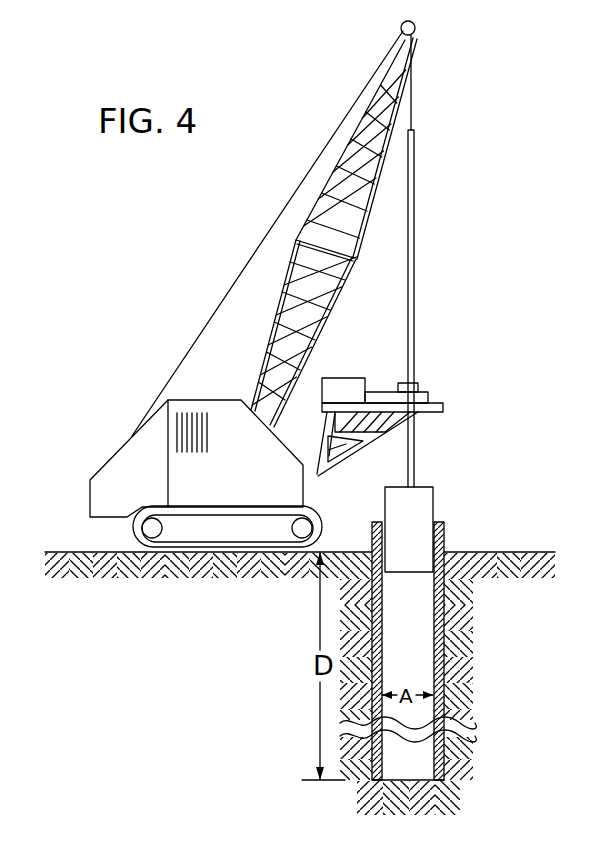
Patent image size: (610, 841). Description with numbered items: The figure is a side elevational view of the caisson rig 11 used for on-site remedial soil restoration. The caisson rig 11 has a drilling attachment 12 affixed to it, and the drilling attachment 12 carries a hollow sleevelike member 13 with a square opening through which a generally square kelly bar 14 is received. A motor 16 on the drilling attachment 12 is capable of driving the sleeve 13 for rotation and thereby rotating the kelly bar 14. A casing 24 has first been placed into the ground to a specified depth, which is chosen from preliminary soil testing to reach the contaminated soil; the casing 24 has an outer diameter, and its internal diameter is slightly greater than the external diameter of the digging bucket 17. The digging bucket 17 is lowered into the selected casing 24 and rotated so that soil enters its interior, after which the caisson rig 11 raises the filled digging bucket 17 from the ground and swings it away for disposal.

The caisson rig 11 is at (157, 305).
The drilling attachment 12 is at (354, 373).
The hollow sleevelike member 13 is at (419, 384).
The kelly bar 14 is at (415, 266).
The motor 16 is at (333, 386).
The digging bucket 17 is at (423, 504).
The casing 24 is at (374, 533).